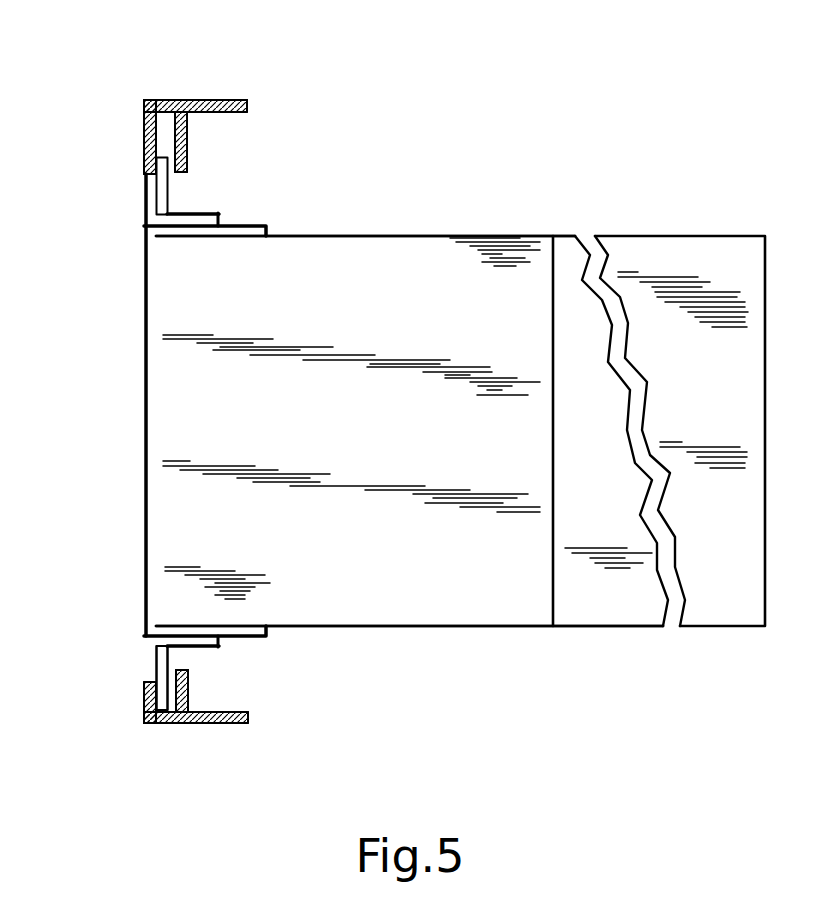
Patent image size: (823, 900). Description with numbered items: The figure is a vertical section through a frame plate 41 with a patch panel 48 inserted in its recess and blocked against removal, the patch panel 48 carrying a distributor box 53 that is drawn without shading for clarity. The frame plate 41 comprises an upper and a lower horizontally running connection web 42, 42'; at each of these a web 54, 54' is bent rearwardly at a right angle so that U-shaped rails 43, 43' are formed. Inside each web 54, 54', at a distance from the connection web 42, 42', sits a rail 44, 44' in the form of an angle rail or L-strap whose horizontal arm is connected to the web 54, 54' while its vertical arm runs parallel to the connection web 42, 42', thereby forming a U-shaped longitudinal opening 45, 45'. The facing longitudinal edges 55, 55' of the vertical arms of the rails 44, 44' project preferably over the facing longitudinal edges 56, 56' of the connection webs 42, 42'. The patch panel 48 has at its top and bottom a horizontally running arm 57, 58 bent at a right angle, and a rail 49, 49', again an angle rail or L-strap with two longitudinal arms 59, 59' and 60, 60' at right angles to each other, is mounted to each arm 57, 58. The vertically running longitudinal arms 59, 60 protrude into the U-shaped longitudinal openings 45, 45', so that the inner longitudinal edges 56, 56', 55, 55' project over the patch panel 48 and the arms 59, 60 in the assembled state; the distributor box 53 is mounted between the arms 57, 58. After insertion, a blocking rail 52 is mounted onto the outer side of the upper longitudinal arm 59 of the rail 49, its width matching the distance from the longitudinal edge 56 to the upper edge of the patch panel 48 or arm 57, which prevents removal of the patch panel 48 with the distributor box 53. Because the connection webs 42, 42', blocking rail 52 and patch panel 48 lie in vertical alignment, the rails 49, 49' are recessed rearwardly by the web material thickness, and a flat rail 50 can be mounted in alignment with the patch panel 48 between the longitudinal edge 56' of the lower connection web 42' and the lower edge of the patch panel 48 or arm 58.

The frame plate 41 is at (253, 94).
The upper horizontally running connection web 42 is at (107, 137).
The upper U-shaped rail 43 is at (160, 90).
The upper rail 44 is at (255, 141).
The upper U-shaped longitudinal opening 45 is at (159, 59).
The patch panel 48 is at (148, 455).
The upper rail 49 is at (232, 190).
The flat rail 50 is at (147, 657).
The blocking rail 52 is at (143, 221).
The distributor box 53 is at (636, 275).
The upper web 54 is at (195, 59).
The upper longitudinal edge of angle rail 55 is at (255, 159).
The upper longitudinal edge of connection web 56 is at (113, 186).
The upper horizontally running arm 57 is at (233, 233).
The lower horizontally running arm 58 is at (240, 628).
The upper vertically running longitudinal arm 59 is at (139, 215).
The upper horizontal longitudinal arm 59' is at (278, 213).
The lower vertically running longitudinal arm 60 is at (114, 678).
The lower horizontal longitudinal arm 60' is at (255, 650).
The lower horizontally running connection web 42' is at (107, 730).
The lower U-shaped rail 43' is at (196, 750).
The lower rail 44' is at (260, 705).
The lower U-shaped longitudinal opening 45' is at (163, 760).
The lower rail 49' is at (236, 666).
The lower web 54' is at (244, 741).
The lower longitudinal edge of angle rail 55' is at (260, 685).
The lower longitudinal edge of connection web 56' is at (111, 688).